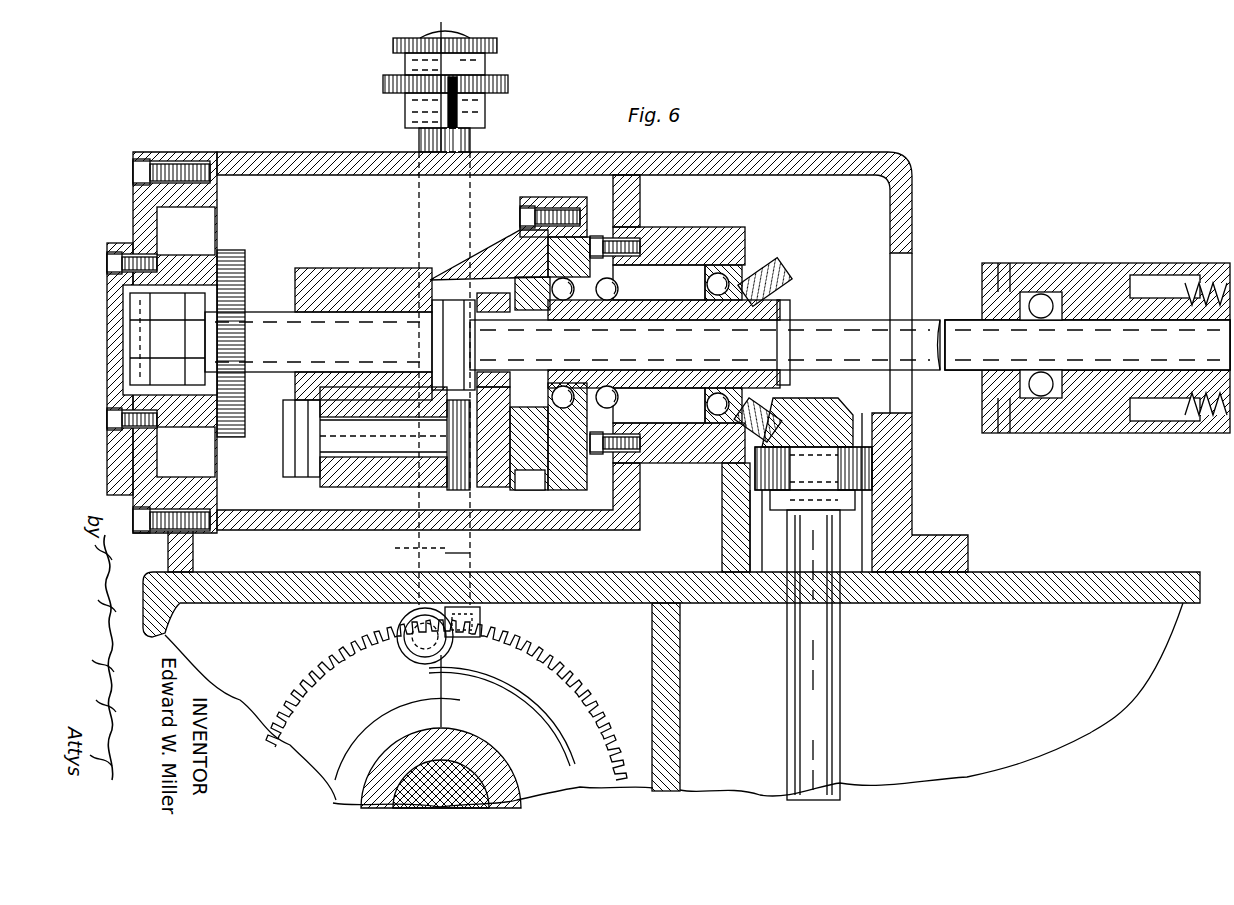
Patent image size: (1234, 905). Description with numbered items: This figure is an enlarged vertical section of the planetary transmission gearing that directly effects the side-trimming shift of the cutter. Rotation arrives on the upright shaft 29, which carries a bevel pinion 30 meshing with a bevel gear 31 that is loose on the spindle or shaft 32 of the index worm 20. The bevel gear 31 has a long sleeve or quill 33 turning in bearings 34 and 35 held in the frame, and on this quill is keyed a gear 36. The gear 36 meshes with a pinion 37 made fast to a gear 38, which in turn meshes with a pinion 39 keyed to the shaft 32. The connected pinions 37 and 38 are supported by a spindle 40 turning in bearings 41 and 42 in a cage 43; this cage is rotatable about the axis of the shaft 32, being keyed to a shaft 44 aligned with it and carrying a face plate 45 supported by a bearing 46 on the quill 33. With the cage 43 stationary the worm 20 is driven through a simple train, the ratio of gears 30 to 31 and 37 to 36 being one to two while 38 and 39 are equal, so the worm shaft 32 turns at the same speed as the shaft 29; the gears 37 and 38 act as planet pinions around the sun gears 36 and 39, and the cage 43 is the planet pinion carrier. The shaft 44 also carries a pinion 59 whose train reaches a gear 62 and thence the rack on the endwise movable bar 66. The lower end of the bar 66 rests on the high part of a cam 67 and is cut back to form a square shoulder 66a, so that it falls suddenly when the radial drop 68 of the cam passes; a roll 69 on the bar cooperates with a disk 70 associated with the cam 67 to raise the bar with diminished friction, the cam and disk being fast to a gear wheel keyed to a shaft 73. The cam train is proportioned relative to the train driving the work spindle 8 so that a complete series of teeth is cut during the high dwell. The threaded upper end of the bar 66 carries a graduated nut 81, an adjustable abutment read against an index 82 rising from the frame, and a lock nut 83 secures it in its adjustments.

The work spindle 8 is at (434, 29).
The worm 20 is at (1197, 295).
The upright shaft 29 is at (823, 688).
The bevel pinion 30 is at (827, 420).
The bevel gear 31 is at (776, 285).
The spindle or shaft of the index worm 32 is at (817, 340).
The sleeve or quill 33 is at (660, 312).
The bearing 34 is at (645, 280).
The bearing 35 is at (742, 270).
The gear 36 is at (535, 287).
The pinion 37 is at (532, 460).
The gear 38 is at (495, 470).
The pinion 39 is at (488, 298).
The spindle 40 is at (367, 440).
The bearing 41 is at (310, 450).
The bearing 42 is at (460, 463).
The cage 43 is at (332, 287).
The shaft 44 is at (263, 317).
The face plate 45 is at (555, 206).
The bearing 46 is at (567, 300).
The pinion 59 is at (233, 362).
The gear 62 is at (235, 252).
The endwise movable bar 66 is at (419, 549).
The square end or shoulder 66a is at (442, 668).
The cam 67 is at (507, 683).
The radial offset or drop 68 is at (441, 677).
The roll 69 is at (398, 638).
The disk 70 is at (530, 727).
The shaft 73 is at (475, 787).
The nut 81 is at (484, 110).
The index 82 is at (460, 139).
The lock nut 83 is at (482, 66).